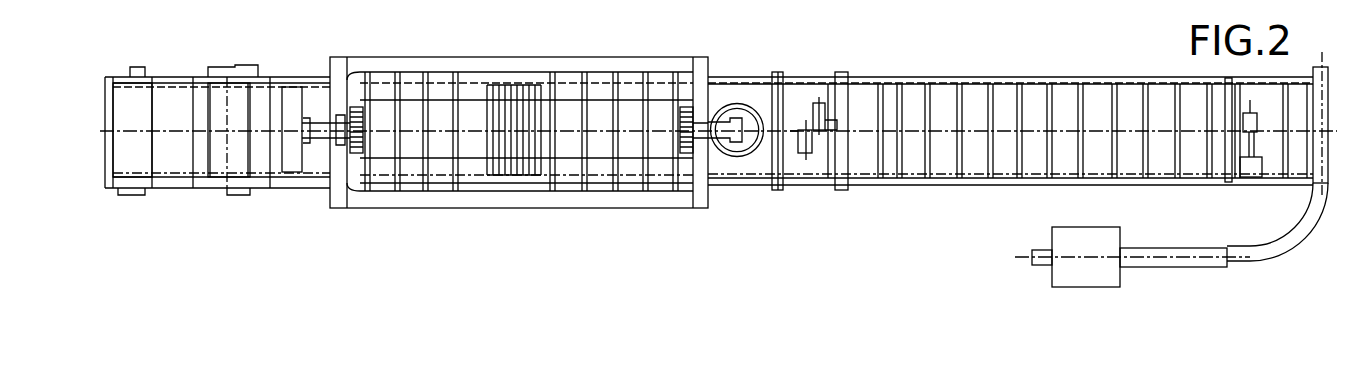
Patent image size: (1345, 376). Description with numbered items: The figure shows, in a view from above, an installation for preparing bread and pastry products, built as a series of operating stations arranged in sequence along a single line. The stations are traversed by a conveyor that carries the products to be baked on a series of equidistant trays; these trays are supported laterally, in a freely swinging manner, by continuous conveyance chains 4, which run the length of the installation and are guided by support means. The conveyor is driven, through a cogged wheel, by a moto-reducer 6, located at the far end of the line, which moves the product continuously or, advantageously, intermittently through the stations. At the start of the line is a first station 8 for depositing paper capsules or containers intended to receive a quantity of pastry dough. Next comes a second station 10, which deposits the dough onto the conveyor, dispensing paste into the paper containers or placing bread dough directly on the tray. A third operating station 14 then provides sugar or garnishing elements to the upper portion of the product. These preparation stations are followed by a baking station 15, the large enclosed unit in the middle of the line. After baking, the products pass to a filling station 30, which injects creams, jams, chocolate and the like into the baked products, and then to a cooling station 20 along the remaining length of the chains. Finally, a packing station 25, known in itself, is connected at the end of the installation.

The continuous conveyance chains 4 is at (268, 77).
The moto-reducer 6 is at (1257, 132).
The first station 8 is at (130, 206).
The second station 10 is at (212, 205).
The third operating station 14 is at (293, 166).
The baking station 15 is at (481, 217).
The cooling station 20 is at (973, 195).
The packing station 25 is at (1131, 226).
The filling station 30 is at (812, 197).